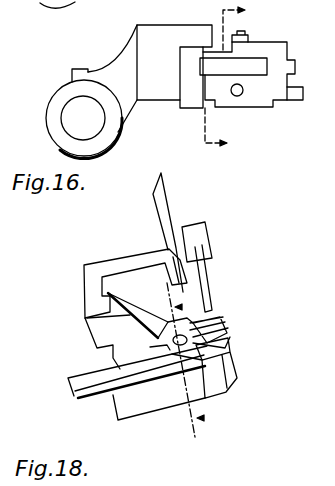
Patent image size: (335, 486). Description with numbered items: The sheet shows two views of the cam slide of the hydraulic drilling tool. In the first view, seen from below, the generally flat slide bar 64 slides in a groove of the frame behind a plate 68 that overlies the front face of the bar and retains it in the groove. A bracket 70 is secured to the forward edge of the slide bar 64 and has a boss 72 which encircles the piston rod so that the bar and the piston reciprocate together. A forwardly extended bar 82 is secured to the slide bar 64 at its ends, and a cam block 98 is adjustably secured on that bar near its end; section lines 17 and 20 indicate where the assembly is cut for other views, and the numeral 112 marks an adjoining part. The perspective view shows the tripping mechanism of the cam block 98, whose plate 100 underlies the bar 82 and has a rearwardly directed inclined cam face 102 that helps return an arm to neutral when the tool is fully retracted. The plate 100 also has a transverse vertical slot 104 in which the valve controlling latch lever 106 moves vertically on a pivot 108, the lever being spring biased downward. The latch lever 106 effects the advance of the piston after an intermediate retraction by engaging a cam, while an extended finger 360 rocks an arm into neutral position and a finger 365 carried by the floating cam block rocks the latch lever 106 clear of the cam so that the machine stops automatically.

In FIG. 16, the section line 17- 17 is at (236, 78).
In FIG. 18, the section line 20- 20 is at (197, 360).
In FIG. 16, the slide bar 64 is at (192, 98).
In FIG. 16, the plate 68 is at (178, 32).
In FIG. 16, the bracket 70 is at (113, 72).
In FIG. 16, the boss 72 is at (60, 100).
In FIG. 16, the forwardly extended bar 82 is at (257, 75).
In FIG. 18, the cam block 98 is at (92, 277).
In FIG. 18, the plate 100 is at (127, 402).
In FIG. 18, the inclined cam face 102 is at (128, 316).
In FIG. 18, the transverse vertical slot 104 is at (222, 392).
In FIG. 16, the latch lever 106 is at (297, 88).
In FIG. 18, the latch lever 106 is at (83, 380).
In FIG. 18, the pivot 108 is at (178, 345).
In FIG. 18, the member 112 is at (323, 286).
In FIG. 18, the extended finger 360 is at (163, 195).
In FIG. 18, the finger 365 is at (207, 278).